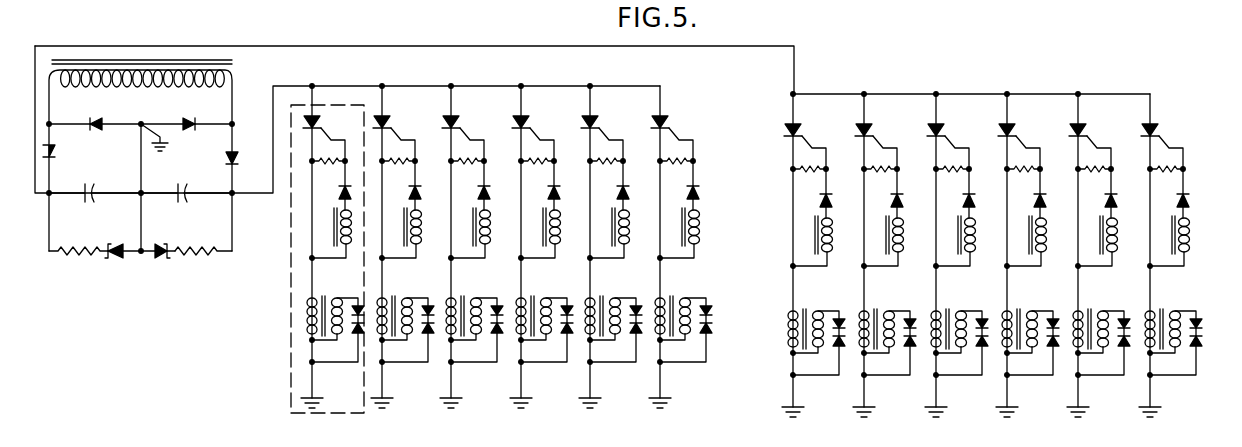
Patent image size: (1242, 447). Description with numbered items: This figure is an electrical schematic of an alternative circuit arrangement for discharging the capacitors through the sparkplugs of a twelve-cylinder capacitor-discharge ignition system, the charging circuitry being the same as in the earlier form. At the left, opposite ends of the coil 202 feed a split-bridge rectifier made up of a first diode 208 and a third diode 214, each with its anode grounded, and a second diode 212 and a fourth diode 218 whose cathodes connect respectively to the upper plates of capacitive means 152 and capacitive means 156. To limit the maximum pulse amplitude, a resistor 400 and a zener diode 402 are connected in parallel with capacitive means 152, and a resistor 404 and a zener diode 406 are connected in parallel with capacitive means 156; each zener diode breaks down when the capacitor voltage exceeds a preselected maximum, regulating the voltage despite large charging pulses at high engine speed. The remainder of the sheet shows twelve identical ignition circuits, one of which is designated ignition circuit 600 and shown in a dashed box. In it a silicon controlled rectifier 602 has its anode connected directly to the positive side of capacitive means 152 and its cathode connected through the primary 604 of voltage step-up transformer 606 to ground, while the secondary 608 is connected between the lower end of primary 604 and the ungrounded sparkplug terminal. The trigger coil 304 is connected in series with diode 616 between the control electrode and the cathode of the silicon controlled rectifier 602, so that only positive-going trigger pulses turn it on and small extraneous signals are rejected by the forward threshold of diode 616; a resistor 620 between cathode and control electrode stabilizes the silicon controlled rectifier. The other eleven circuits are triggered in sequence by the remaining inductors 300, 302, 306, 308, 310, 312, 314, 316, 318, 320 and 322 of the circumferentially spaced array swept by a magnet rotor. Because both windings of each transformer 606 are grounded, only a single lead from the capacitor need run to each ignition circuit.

The coil 202 is at (165, 82).
The third diode 214 is at (95, 118).
The first diode 208 is at (187, 118).
The fourth diode 218 is at (57, 152).
The second diode 212 is at (224, 156).
The capacitive means 156 is at (86, 203).
The capacitive means 152 is at (190, 204).
The resistor 404 is at (82, 256).
The zener diode 406 is at (111, 262).
The zener diode 402 is at (167, 263).
The resistor 400 is at (191, 258).
The ignition circuit 600 is at (345, 105).
The silicon controlled rectifier 602 is at (322, 124).
The diode 616 is at (347, 184).
The resistor 620 is at (329, 150).
The trigger coil 304 is at (333, 216).
The voltage step-up transformer 606 is at (345, 284).
The primary 604 is at (305, 312).
The secondary 608 is at (338, 330).
The inductor 308 is at (420, 238).
The inductor 312 is at (489, 238).
The inductor 316 is at (559, 238).
The inductor 320 is at (628, 238).
The inductor 300 is at (692, 240).
The inductor 306 is at (829, 242).
The inductor 310 is at (900, 242).
The inductor 314 is at (972, 242).
The inductor 318 is at (1043, 242).
The inductor 322 is at (1114, 242).
The inductor 302 is at (1185, 238).